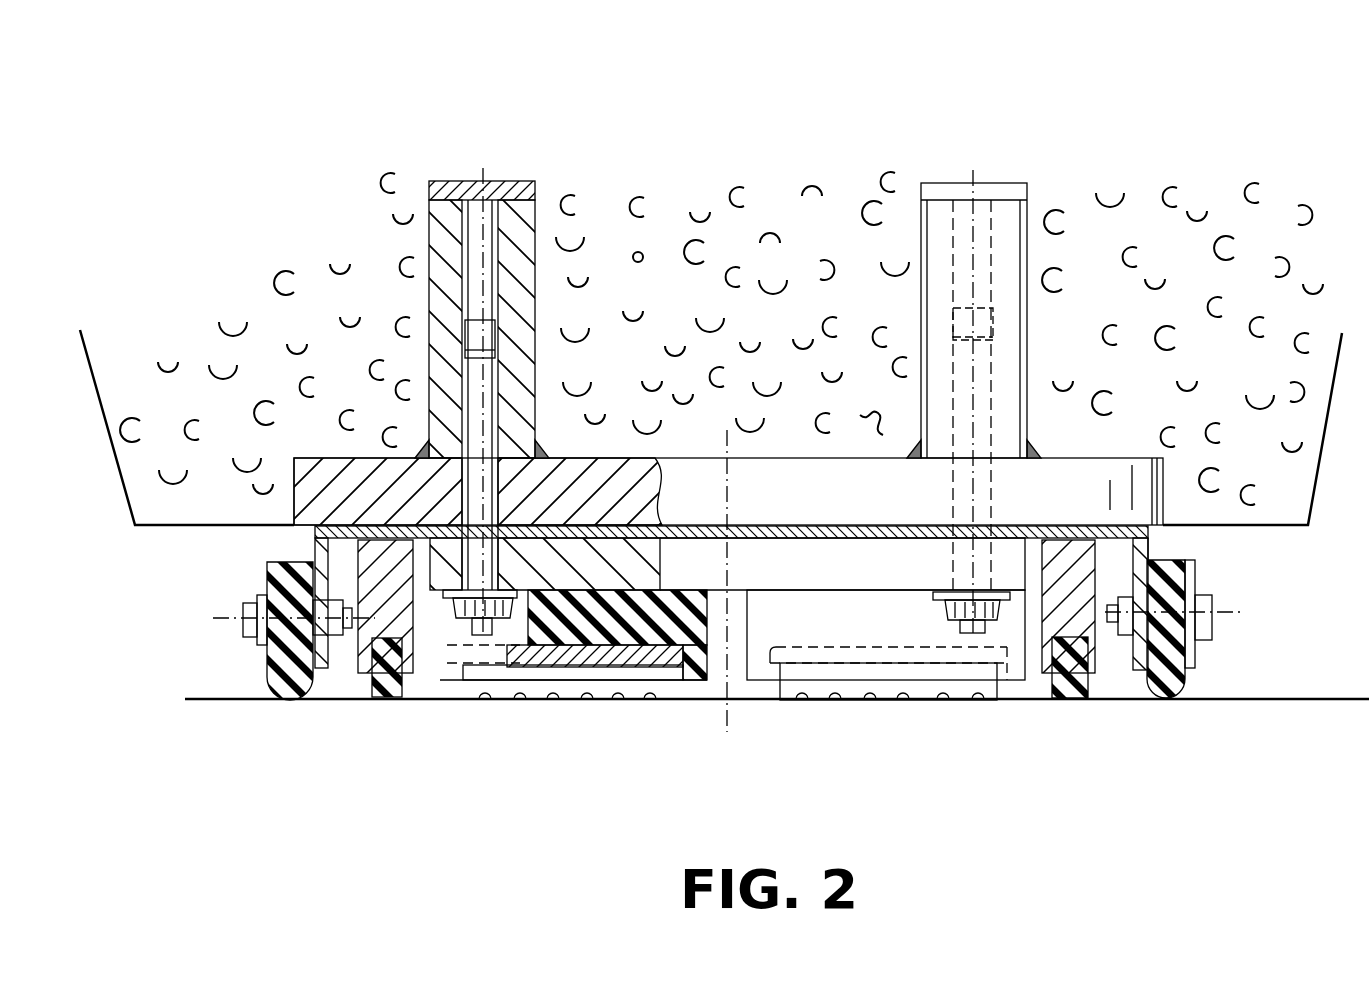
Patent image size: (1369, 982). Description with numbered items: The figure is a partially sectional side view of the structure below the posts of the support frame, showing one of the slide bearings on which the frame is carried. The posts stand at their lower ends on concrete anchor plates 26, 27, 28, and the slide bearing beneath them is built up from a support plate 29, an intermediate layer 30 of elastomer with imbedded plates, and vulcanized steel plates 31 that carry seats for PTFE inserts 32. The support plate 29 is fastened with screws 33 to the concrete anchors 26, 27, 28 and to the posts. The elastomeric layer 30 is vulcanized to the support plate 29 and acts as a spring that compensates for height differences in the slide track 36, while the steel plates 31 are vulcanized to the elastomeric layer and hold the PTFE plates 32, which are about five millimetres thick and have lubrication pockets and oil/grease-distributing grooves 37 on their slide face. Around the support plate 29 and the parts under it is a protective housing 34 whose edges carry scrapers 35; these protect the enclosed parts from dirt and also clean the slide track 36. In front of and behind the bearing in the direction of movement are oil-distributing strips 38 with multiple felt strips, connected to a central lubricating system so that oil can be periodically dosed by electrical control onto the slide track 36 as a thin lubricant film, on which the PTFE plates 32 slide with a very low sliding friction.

The concrete anchor plate 26 is at (440, 222).
The concrete anchor plate 27 is at (696, 352).
The concrete anchor plate 28 is at (862, 503).
The support plate 29 is at (860, 584).
The intermediate layer of elastomer 30 is at (862, 636).
The vulcanized steel plates 31 is at (775, 648).
The PTFE inserts 32 is at (570, 675).
The screws 33 is at (468, 392).
The protective housing 34 is at (1148, 540).
The scrapers 35 is at (1165, 699).
The slide track 36 is at (1243, 700).
The oil/grease-distributing grooves 37 is at (905, 699).
The oil-distributing strips 38 is at (1052, 685).